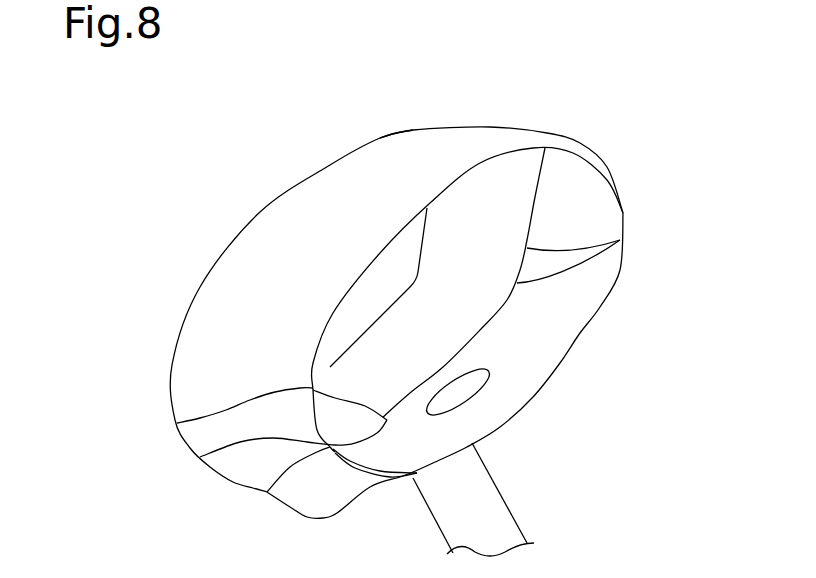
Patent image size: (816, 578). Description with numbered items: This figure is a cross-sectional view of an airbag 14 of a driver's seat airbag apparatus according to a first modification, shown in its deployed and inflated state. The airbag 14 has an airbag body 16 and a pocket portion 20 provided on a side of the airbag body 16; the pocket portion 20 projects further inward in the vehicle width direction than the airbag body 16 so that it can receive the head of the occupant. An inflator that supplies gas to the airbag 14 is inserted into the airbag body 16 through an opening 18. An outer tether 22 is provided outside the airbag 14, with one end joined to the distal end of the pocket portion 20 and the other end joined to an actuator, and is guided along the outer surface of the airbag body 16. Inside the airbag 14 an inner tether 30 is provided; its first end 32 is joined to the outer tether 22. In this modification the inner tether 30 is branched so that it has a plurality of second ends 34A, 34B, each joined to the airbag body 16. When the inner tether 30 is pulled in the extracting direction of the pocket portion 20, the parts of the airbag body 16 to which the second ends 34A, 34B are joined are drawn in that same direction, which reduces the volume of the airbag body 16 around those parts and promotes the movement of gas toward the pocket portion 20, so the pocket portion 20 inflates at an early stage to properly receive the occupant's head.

The airbag 14 is at (434, 345).
The airbag body 16 is at (265, 227).
The pocket portion 20 is at (250, 479).
The second end 34A is at (485, 142).
The second end 34B is at (587, 253).
The inner tether 30 is at (477, 317).
The opening 18 is at (483, 378).
The first end 32 is at (177, 423).
The outer tether 22 is at (357, 419).